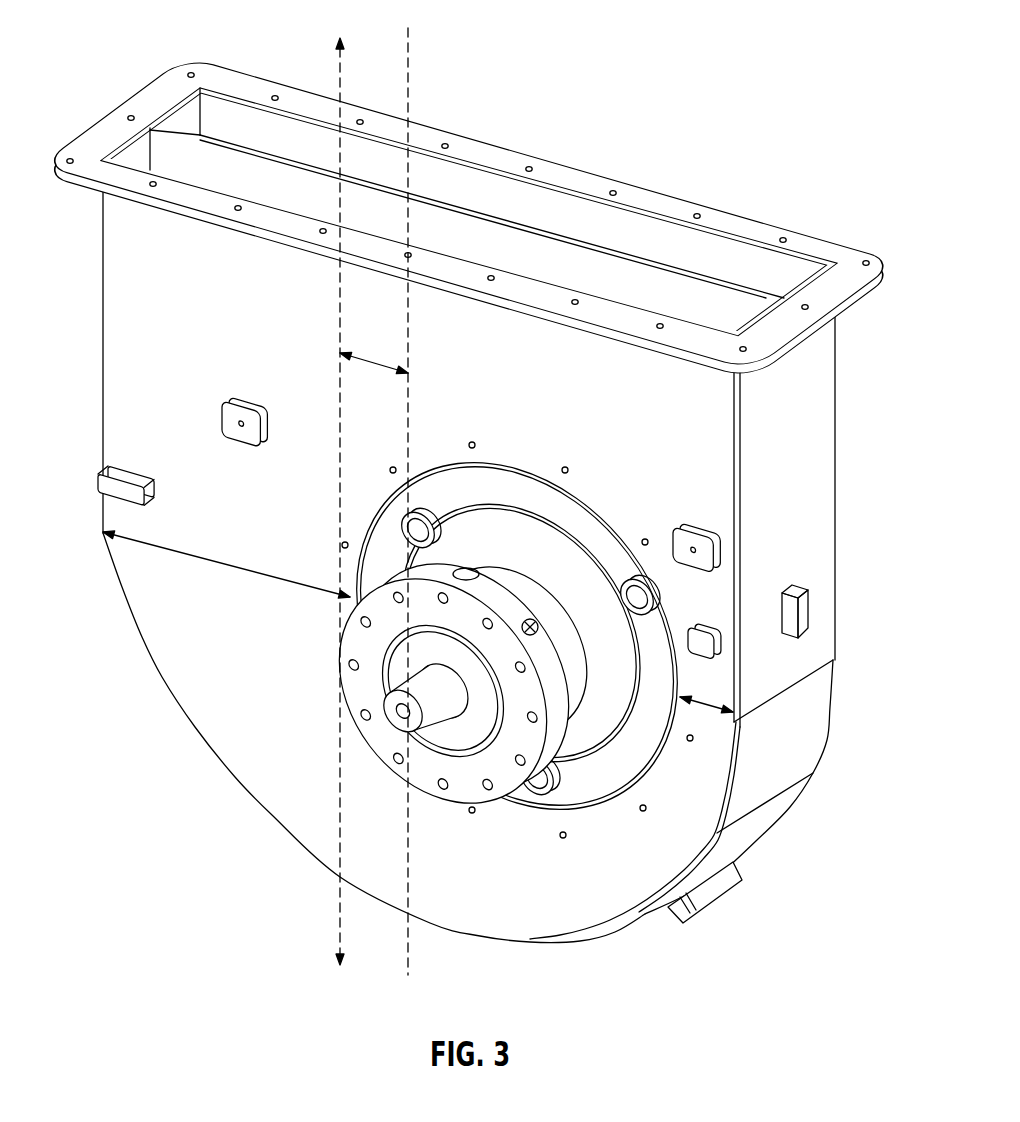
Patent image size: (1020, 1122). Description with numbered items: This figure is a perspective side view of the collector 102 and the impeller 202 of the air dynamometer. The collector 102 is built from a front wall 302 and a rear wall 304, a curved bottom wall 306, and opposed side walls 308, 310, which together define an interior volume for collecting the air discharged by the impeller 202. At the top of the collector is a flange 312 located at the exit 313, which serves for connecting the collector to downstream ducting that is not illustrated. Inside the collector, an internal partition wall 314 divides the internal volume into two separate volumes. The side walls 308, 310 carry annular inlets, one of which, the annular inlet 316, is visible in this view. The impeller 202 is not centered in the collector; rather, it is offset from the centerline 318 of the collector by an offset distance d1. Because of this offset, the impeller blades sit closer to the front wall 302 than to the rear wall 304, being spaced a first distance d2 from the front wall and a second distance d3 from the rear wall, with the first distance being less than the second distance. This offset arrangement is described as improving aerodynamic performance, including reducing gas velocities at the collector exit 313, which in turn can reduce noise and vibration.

The collector 102 is at (480, 499).
The impeller 202 is at (521, 845).
The front wall 302 is at (817, 428).
The rear wall 304 is at (101, 328).
The curved bottom wall 306 is at (774, 860).
The side wall 308 is at (630, 414).
The side wall 310 is at (469, 169).
The flange 312 is at (207, 80).
The exit 313 is at (468, 191).
The internal partition wall 314 is at (230, 145).
The annular inlet 316 is at (598, 508).
The centerline 318 is at (341, 77).
The offset distance d1 is at (376, 372).
The first distance d2 is at (713, 713).
The second distance d3 is at (228, 568).